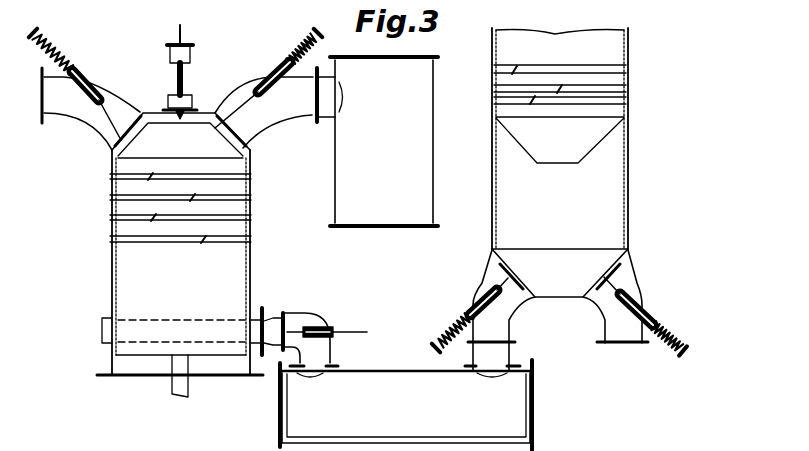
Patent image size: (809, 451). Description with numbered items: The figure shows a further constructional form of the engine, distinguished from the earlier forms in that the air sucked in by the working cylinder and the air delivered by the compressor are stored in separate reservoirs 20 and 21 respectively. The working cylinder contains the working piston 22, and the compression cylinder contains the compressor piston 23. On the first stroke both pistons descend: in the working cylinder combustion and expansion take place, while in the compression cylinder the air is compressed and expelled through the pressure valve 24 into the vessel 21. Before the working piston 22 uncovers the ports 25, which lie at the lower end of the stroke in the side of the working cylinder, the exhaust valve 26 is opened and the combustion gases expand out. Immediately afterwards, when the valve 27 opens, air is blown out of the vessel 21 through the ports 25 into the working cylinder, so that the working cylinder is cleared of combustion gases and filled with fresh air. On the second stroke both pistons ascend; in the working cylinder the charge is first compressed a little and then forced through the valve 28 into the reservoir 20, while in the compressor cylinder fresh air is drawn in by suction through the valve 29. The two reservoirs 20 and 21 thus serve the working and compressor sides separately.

The reservoir 20 is at (397, 68).
The reservoir 21 is at (397, 374).
The working piston 22 is at (122, 280).
The compressor piston 23 is at (621, 95).
The pressure valve 24 is at (503, 283).
The ports 25 is at (255, 322).
The exhaust valve 26 is at (117, 115).
The valve 27 is at (357, 333).
The valve 28 is at (247, 106).
The valve 29 is at (621, 282).